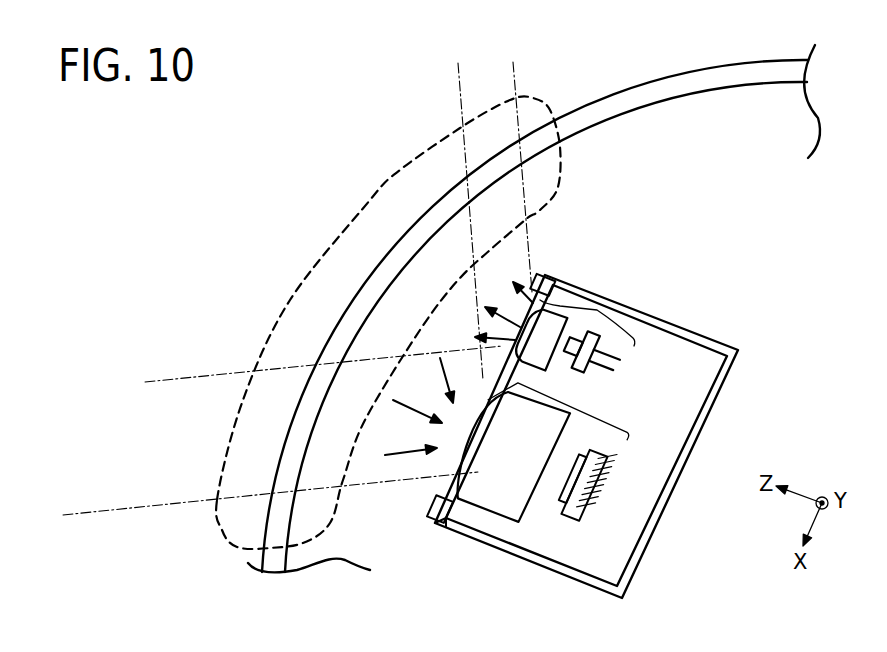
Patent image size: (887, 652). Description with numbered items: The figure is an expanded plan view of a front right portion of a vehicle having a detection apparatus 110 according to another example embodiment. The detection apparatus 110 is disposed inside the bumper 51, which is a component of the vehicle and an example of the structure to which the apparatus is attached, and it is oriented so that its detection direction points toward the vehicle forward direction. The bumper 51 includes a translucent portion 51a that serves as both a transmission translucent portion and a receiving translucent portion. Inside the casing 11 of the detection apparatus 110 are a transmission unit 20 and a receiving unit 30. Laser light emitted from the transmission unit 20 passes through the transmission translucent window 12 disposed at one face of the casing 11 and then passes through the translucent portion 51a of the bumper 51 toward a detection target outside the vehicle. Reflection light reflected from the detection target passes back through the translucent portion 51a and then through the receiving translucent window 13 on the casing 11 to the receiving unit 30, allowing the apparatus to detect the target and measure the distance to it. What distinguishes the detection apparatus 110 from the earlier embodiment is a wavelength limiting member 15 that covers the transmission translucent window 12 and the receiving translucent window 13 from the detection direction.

The bumper 51 is at (693, 85).
The translucent portion 51a is at (533, 97).
The detection apparatus 110 is at (596, 414).
The casing 11 is at (720, 340).
The transmission translucent window 12 is at (552, 275).
The transmission unit 20 is at (600, 308).
The receiving unit 30 is at (571, 406).
The wavelength limiting member 15 is at (420, 500).
The receiving translucent window 13 is at (437, 527).